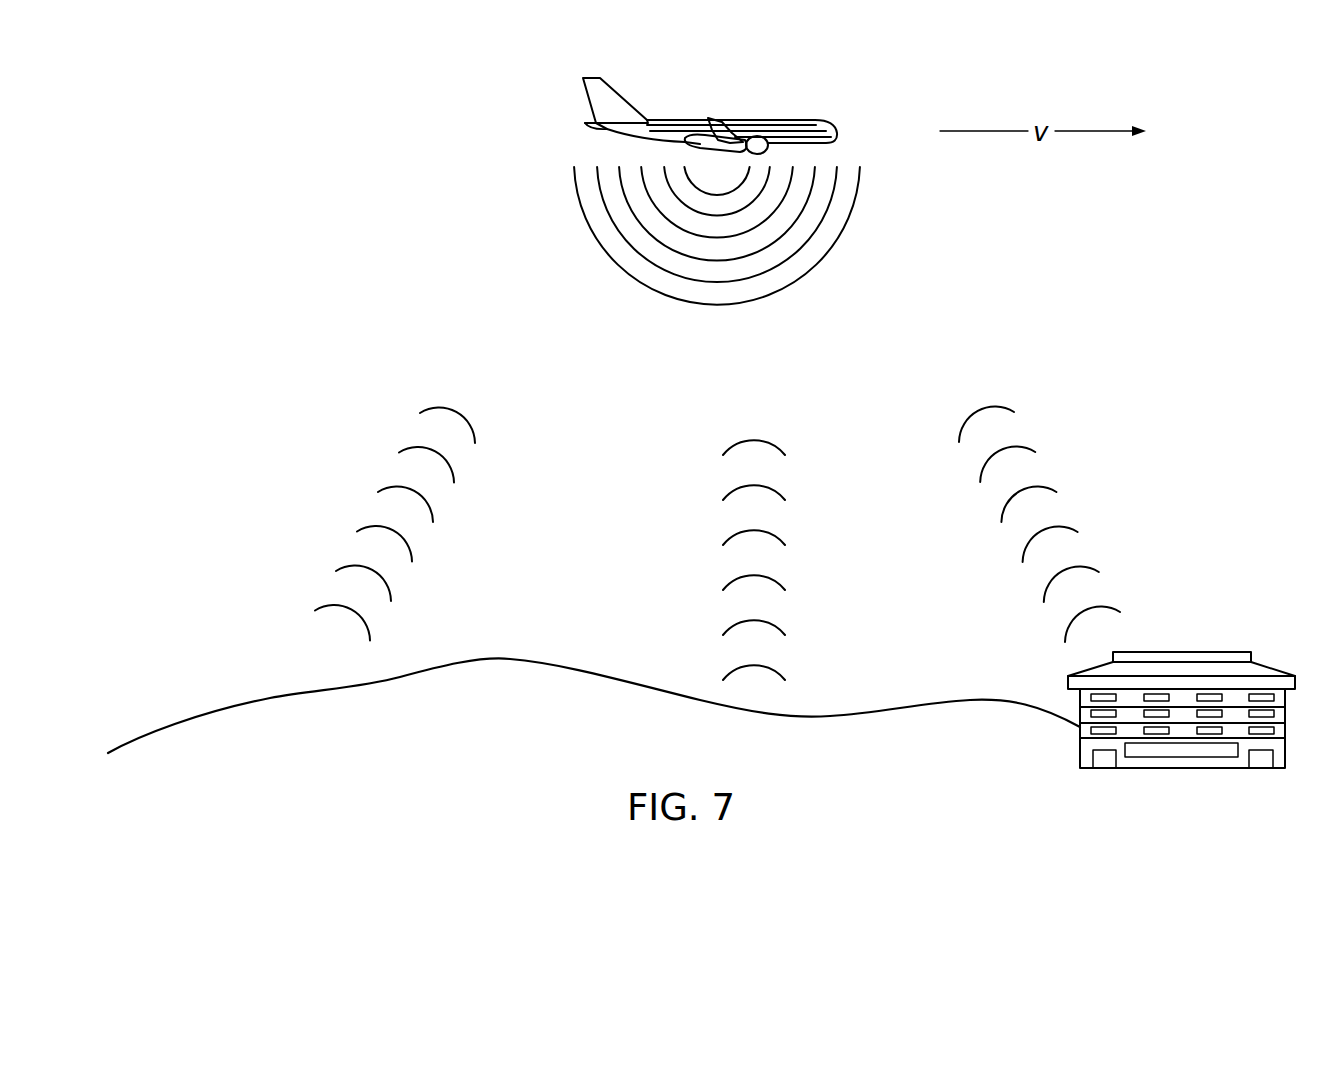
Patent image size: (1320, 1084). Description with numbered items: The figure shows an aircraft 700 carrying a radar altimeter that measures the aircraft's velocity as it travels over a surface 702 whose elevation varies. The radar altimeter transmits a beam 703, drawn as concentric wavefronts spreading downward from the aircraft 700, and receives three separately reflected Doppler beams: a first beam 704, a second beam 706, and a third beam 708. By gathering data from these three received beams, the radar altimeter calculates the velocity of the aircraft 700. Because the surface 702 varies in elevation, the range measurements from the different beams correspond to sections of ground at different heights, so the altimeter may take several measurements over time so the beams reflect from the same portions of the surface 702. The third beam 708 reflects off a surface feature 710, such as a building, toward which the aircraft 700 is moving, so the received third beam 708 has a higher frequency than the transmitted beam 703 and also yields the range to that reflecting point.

The aircraft 700 is at (765, 120).
The surface 702 is at (165, 722).
The transmitted beam 703 is at (576, 204).
The first beam 704 is at (380, 491).
The second beam 706 is at (723, 545).
The third beam 708 is at (1057, 492).
The surface feature 710 is at (1270, 668).